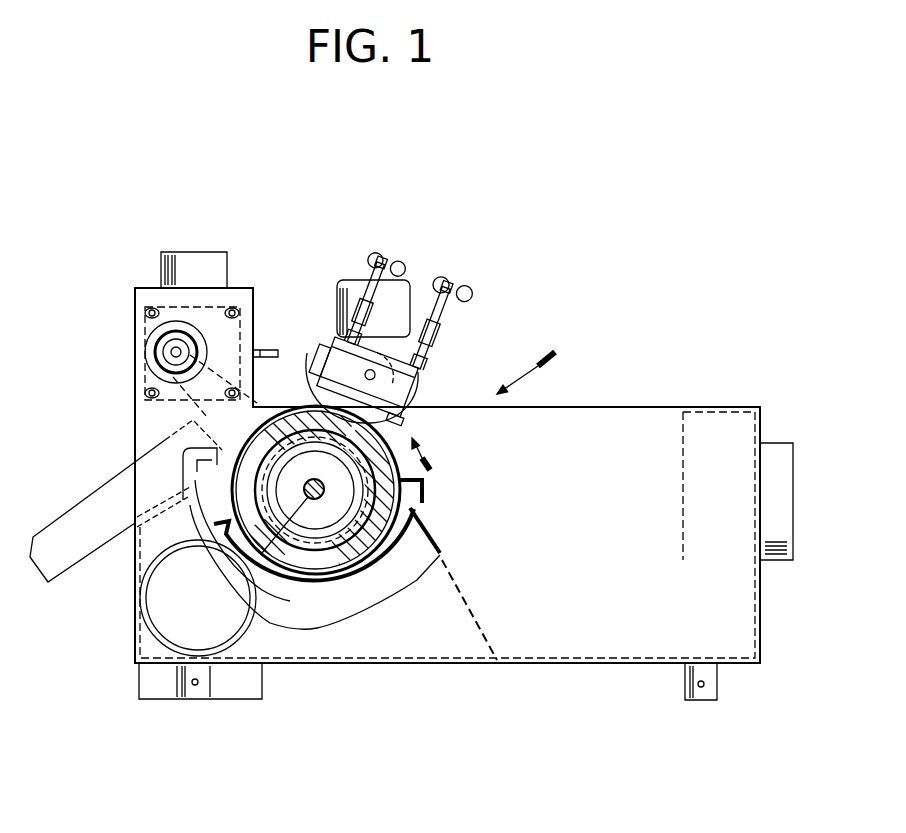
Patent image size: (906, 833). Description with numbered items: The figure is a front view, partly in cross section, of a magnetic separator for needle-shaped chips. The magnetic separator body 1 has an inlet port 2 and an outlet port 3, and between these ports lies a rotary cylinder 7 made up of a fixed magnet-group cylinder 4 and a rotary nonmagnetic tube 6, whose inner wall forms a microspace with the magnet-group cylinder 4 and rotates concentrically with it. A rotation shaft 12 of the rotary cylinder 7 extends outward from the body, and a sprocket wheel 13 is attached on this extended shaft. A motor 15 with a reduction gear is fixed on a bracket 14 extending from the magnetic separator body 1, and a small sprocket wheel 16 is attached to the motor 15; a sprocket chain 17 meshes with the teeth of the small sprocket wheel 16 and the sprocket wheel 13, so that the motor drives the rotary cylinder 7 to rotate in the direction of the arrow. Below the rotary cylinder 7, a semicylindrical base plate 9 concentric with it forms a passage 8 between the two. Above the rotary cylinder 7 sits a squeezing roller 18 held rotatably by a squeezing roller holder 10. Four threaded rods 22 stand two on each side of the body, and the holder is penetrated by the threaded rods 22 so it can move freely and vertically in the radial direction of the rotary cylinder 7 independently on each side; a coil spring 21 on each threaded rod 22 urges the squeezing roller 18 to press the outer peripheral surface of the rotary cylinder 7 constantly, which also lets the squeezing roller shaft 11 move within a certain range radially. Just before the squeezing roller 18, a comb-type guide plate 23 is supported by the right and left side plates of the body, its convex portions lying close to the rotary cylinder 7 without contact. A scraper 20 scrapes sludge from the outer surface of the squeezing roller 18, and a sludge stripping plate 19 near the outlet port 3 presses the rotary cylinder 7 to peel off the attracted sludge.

The magnetic separator body 1 is at (597, 617).
The inlet port 2 is at (780, 498).
The outlet port 3 is at (137, 627).
The magnet-group cylinder 4 is at (310, 498).
The rotary nonmagnetic tube 6 is at (145, 568).
The rotary cylinder 7 is at (220, 494).
The passage 8 is at (170, 612).
The semicylindrical base plate 9 is at (353, 570).
The squeezing roller holder 10 is at (420, 407).
The squeezing roller shaft 11 is at (427, 386).
The rotation shaft 12 is at (259, 540).
The sprocket wheel 13 is at (327, 523).
The bracket 14 is at (145, 288).
The motor 15 is at (177, 262).
The small sprocket wheel 16 is at (175, 350).
The sprocket chain 17 is at (263, 415).
The squeezing roller 18 is at (413, 425).
The sludge stripping plate 19 is at (240, 462).
The scraper 20 is at (293, 415).
The coil spring 21 is at (382, 256).
The threaded rod 22 is at (455, 288).
The comb-type guide plate 23 is at (430, 410).